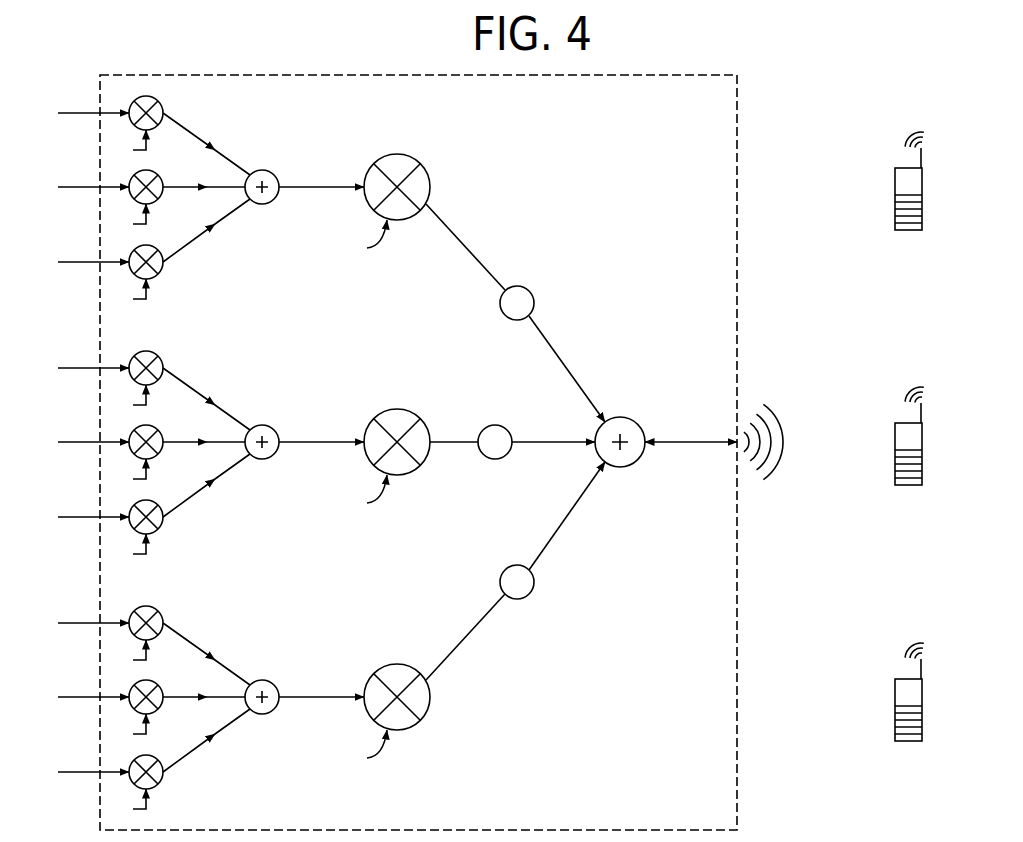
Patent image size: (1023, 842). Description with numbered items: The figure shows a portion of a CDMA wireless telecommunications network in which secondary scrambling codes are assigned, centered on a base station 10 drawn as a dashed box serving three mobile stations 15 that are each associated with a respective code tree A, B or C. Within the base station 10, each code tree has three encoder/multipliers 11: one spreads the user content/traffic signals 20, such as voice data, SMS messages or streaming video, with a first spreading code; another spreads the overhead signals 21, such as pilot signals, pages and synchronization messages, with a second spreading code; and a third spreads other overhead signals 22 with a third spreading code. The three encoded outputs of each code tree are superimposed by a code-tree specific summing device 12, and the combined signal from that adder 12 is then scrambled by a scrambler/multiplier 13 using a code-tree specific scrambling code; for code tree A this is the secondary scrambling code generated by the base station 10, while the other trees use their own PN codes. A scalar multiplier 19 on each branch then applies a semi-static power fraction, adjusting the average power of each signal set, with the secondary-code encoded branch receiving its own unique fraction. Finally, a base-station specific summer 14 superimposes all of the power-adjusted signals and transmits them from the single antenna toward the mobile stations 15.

The base station 10 is at (737, 762).
The encoder/multiplier 11 is at (168, 753).
The summing device 12 is at (262, 732).
The scrambler/multiplier 13 is at (416, 653).
The base-station specific summer 14 is at (620, 467).
The mobile station 15 is at (951, 701).
The scalar multiplier 19 is at (551, 583).
The user content/traffic signals 20 is at (93, 353).
The overhead signals 21 is at (93, 427).
The other overhead signals 22 is at (93, 502).